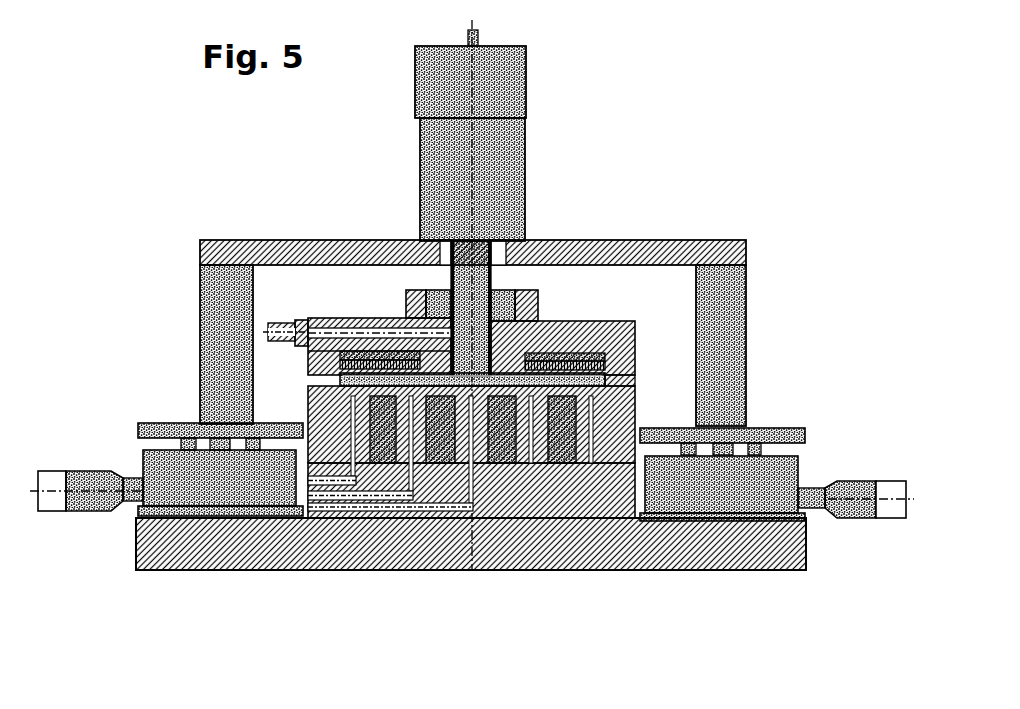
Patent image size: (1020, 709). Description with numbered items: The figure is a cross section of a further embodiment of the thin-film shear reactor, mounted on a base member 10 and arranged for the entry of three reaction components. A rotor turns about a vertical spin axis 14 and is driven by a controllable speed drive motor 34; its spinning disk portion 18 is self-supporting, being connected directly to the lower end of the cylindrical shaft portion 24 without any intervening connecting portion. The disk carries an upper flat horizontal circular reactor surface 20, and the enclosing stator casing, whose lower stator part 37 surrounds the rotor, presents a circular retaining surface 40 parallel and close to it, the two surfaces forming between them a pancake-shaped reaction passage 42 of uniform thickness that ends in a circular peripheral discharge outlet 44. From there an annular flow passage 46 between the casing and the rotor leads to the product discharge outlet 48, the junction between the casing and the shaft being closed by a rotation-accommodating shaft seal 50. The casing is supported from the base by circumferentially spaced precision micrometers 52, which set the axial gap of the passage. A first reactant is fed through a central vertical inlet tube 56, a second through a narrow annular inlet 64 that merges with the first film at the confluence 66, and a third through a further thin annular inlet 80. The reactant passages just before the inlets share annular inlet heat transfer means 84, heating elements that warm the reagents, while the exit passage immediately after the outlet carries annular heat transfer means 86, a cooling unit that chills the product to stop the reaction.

The base member 10 is at (334, 243).
The vertical spin axis 14 is at (464, 563).
The disk portion 18 is at (497, 368).
The reactor surface 20 is at (512, 375).
The shaft portion 24 is at (465, 280).
The drive motor 34 is at (483, 180).
The lower stator part 37 is at (490, 487).
The retaining surface 40 is at (578, 388).
The reaction passage 42 is at (365, 383).
The discharge outlet 44 is at (627, 374).
The flow passage 46 is at (362, 365).
The product discharge outlet 48 is at (272, 318).
The shaft seal 50 is at (500, 295).
The precision micrometers 52 is at (68, 466).
The inlet tube 56 is at (345, 500).
The annular inlet 64 is at (384, 492).
The confluence 66 is at (765, 282).
The inlet 80 is at (318, 472).
The inlet heat transfer means 84 is at (422, 457).
The heat transfer means 86 is at (393, 352).